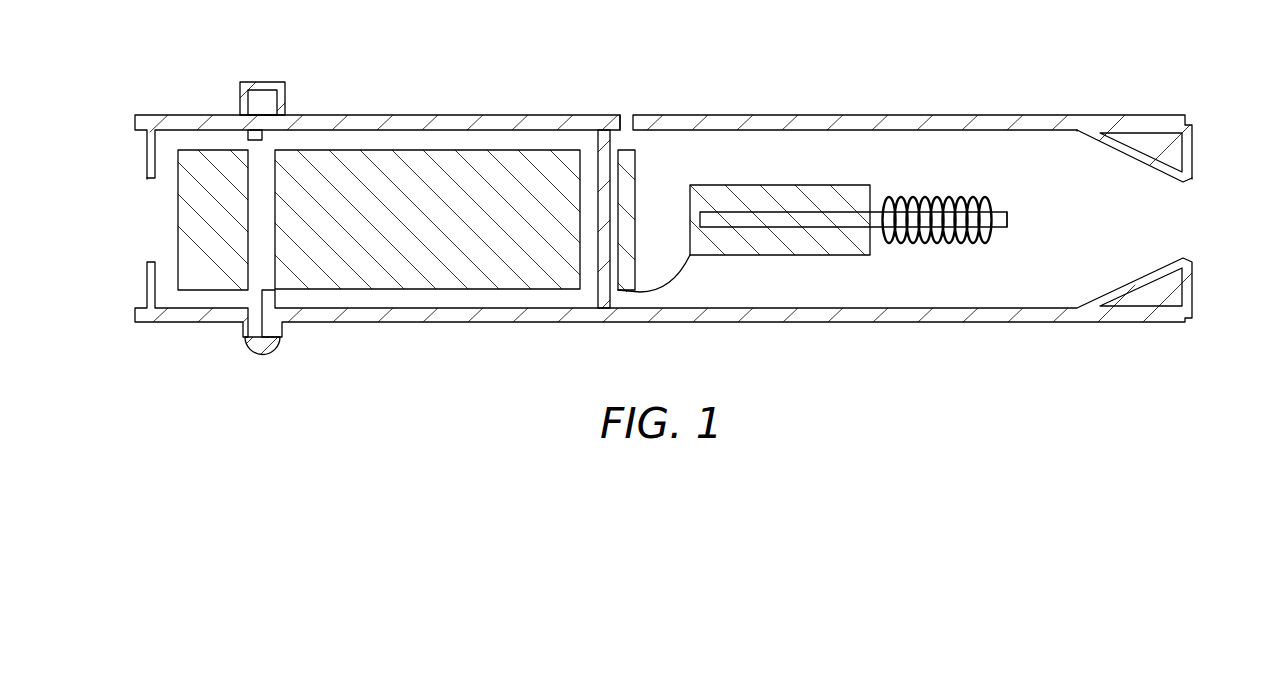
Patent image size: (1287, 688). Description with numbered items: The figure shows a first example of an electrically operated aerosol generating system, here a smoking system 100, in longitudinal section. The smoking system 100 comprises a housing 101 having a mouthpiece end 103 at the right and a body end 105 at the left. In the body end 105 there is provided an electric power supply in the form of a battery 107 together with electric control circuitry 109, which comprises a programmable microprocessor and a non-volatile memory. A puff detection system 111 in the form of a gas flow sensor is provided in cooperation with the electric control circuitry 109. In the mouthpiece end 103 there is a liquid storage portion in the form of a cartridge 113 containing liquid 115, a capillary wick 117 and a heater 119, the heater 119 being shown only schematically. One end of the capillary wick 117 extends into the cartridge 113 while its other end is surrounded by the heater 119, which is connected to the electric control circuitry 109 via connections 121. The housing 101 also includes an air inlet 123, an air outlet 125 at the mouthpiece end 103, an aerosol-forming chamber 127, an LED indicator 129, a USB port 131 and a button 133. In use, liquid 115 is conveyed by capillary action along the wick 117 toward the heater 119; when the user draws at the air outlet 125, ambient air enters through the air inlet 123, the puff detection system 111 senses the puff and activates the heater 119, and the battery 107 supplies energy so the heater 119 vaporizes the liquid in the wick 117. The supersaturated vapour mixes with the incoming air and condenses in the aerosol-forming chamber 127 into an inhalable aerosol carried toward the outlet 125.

The smoking system 100 is at (114, 115).
The housing 101 is at (429, 113).
The mouthpiece end 103 is at (1162, 373).
The body end 105 is at (166, 372).
The battery 107 is at (429, 292).
The electric control circuitry 109 is at (222, 292).
The puff detection system 111 is at (651, 146).
The cartridge 113 is at (781, 257).
The liquid 115 is at (841, 176).
The capillary wick 117 is at (1007, 219).
The heater 119 is at (939, 254).
The connections 121 is at (652, 294).
The air inlet 123 is at (623, 107).
The air outlet 125 is at (1198, 222).
The aerosol-forming chamber 127 is at (1009, 148).
The LED indicator 129 is at (262, 356).
The USB port 131 is at (148, 218).
The button 133 is at (263, 82).